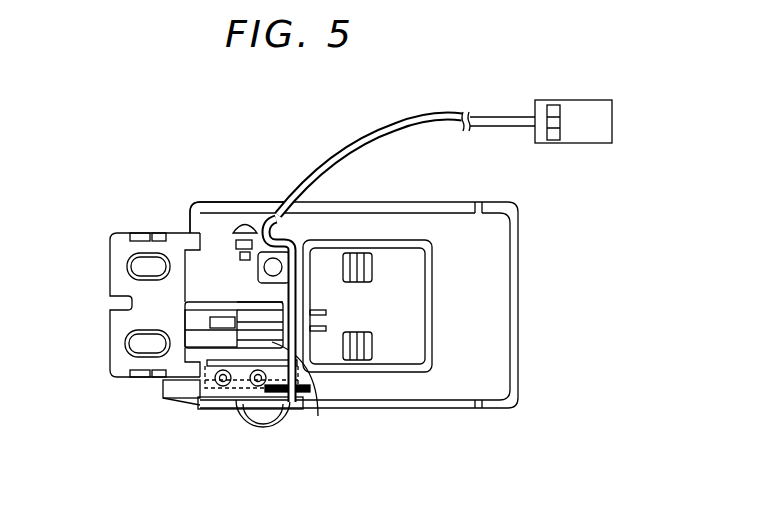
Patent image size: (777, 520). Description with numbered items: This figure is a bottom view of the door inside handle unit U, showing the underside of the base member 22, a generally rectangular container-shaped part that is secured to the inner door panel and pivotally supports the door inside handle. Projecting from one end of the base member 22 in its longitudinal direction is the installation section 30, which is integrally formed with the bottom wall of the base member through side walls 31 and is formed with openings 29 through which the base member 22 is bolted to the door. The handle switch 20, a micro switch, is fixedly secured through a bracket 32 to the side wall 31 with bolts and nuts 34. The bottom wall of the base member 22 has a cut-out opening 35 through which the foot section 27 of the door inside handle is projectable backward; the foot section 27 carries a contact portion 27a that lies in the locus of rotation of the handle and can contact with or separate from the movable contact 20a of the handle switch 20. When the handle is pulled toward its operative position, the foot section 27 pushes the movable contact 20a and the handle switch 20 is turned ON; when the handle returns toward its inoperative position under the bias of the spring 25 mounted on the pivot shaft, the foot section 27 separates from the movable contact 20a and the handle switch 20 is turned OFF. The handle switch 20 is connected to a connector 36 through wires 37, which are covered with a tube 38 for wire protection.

The handle switch 20 is at (218, 410).
The movable contact 20a is at (318, 408).
The base member 22 is at (518, 305).
The spring 25 is at (266, 212).
The foot section 27 is at (190, 322).
The contact portion 27a is at (197, 380).
The openings 29 is at (137, 262).
The installation section 30 is at (110, 280).
The side walls 31 is at (205, 203).
The bracket 32 is at (176, 405).
The nuts 34 is at (207, 410).
The cut-out opening 35 is at (250, 305).
The connector 36 is at (572, 100).
The wires 37 is at (280, 425).
The tube 38 is at (393, 128).
The door inside handle unit U is at (505, 427).